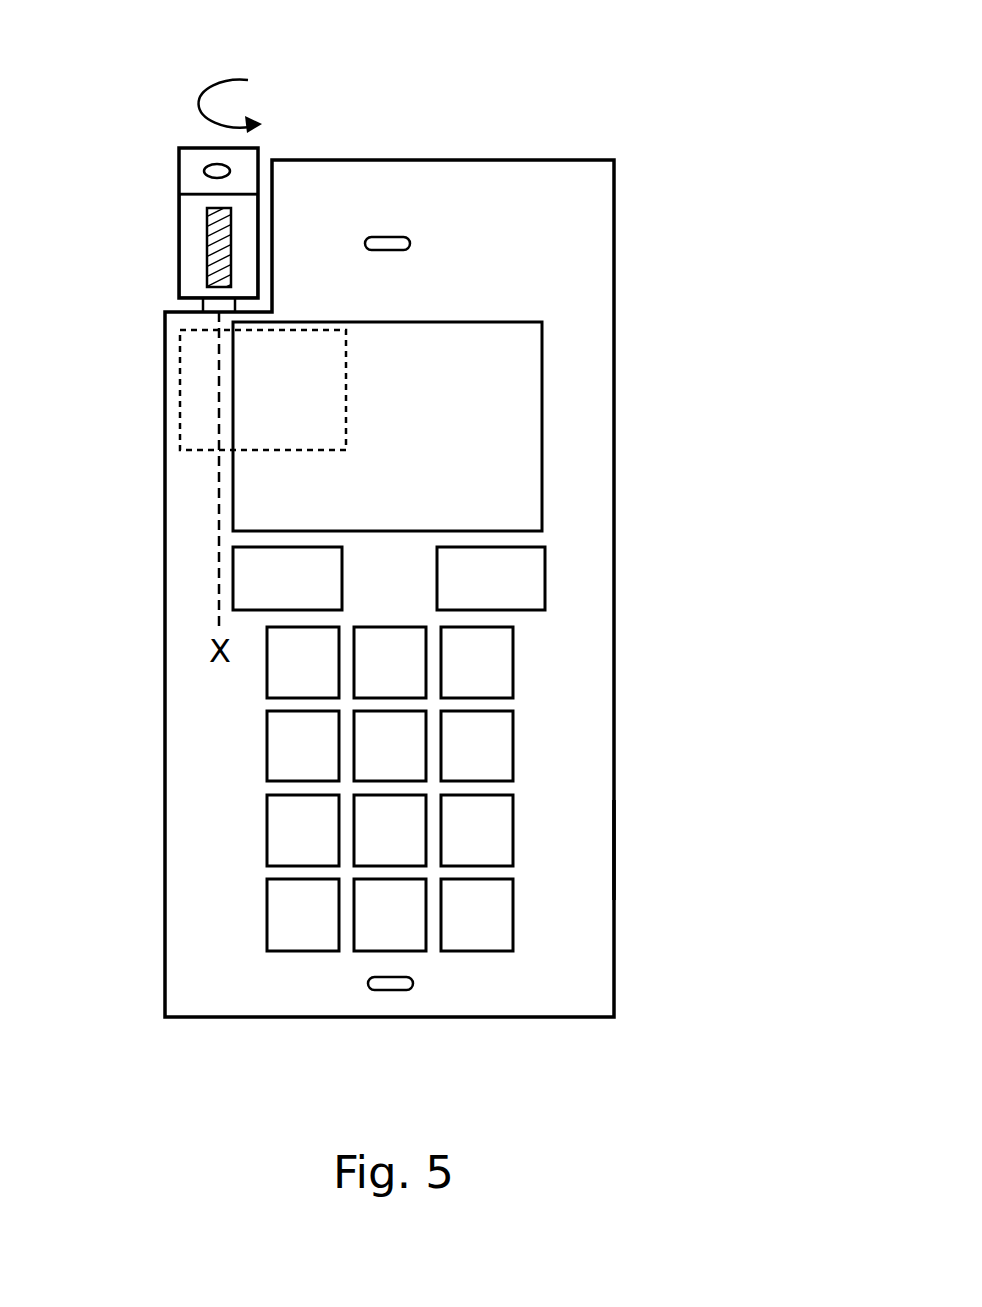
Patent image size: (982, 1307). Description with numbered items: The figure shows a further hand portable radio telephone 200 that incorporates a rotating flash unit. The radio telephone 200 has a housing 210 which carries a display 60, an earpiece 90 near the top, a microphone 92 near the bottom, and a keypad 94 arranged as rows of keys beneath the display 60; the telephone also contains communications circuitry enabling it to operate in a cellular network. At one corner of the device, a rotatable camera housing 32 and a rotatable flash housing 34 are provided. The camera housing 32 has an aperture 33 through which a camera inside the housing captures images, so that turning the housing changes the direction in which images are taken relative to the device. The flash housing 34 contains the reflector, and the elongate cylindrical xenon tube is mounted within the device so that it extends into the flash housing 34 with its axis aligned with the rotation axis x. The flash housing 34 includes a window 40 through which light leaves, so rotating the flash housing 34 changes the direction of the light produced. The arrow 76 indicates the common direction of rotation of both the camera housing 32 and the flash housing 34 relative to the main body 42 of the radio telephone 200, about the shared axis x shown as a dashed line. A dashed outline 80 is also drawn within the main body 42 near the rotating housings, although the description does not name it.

The camera housing 32 is at (192, 180).
The aperture 33 is at (230, 170).
The flash housing 34 is at (192, 208).
The window 40 is at (205, 252).
The main body 42 is at (614, 287).
The display 60 is at (542, 430).
The arrow 76 is at (202, 77).
The antenna region 80 is at (346, 398).
The earpiece 90 is at (388, 237).
The microphone 92 is at (383, 990).
The keypad 94 is at (513, 747).
The hand portable radio telephone 200 is at (712, 557).
The housing 210 is at (615, 850).